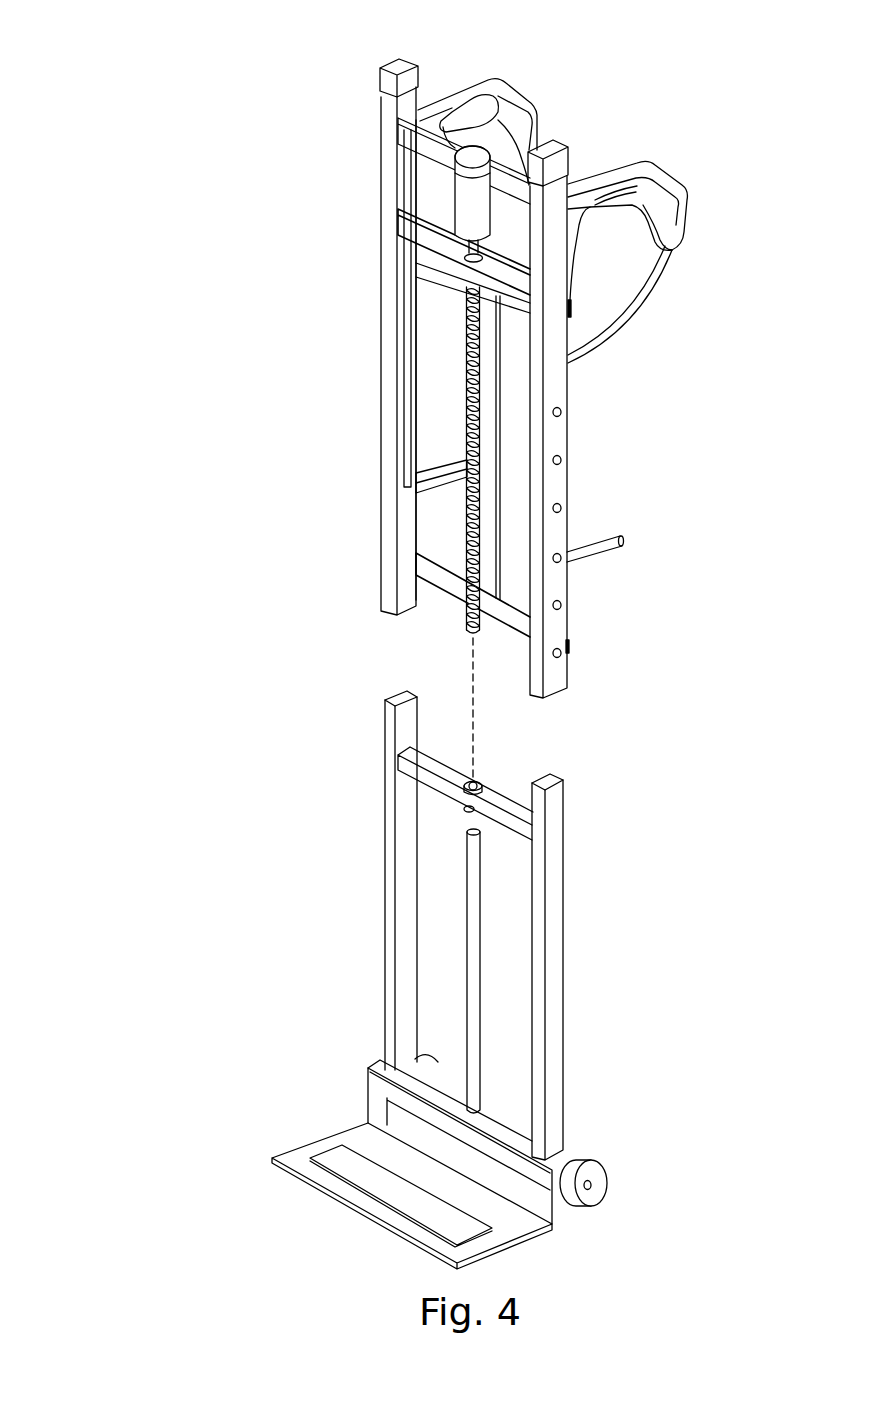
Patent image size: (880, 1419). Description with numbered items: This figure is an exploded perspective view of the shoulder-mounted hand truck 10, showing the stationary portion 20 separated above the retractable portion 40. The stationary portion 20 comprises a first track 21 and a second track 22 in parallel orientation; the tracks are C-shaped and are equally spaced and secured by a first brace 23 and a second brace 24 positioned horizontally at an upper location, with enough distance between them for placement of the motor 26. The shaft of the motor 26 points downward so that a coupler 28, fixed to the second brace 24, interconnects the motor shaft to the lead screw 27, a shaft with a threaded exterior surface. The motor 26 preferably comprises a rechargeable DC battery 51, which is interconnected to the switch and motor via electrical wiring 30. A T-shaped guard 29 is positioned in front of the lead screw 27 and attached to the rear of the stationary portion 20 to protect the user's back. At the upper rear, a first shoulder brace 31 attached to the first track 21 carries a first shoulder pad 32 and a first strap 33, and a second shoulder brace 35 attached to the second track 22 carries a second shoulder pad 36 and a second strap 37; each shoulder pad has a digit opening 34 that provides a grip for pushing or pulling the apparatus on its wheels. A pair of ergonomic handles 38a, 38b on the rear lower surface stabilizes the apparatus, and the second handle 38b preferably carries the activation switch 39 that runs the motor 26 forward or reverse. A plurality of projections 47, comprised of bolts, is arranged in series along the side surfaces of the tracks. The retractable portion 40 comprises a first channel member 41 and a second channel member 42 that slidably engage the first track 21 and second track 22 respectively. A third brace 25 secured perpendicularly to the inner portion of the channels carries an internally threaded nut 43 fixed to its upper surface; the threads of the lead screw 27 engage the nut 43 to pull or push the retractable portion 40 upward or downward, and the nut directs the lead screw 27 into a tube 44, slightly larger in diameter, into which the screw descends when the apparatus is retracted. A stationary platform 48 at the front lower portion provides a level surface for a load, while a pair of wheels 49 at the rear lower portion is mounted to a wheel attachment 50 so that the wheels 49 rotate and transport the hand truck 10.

The shoulder-mounted hand truck 10 is at (137, 168).
The stationary portion 20 is at (727, 548).
The first track 21 is at (568, 585).
The second track 22 is at (418, 530).
The first brace 23 is at (391, 140).
The second brace 24 is at (407, 238).
The third brace 25 is at (520, 832).
The motor 26 is at (470, 210).
The lead screw 27 is at (474, 637).
The coupler 28 is at (467, 284).
The T-shaped guard 29 is at (437, 578).
The electrical wiring 30 is at (403, 447).
The first shoulder brace 31 is at (684, 206).
The first shoulder pad 32 is at (670, 234).
The first strap 33 is at (637, 313).
The digit opening 34 is at (627, 150).
The second shoulder brace 35 is at (456, 96).
The second shoulder pad 36 is at (498, 116).
The second strap 37 is at (422, 273).
The first ergonomic handle 38a is at (625, 540).
The second ergonomic handle 38b is at (438, 472).
The activation switch 39 is at (445, 483).
The retractable portion 40 is at (259, 998).
The first channel member 41 is at (550, 985).
The second channel member 42 is at (405, 735).
The internally threaded nut 43 is at (470, 808).
The tube 44 is at (467, 962).
The projections 47 is at (563, 505).
The stationary platform 48 is at (317, 1173).
The wheels 49 is at (582, 1208).
The wheel attachment 50 is at (590, 1173).
The rechargeable DC battery 51 is at (492, 159).